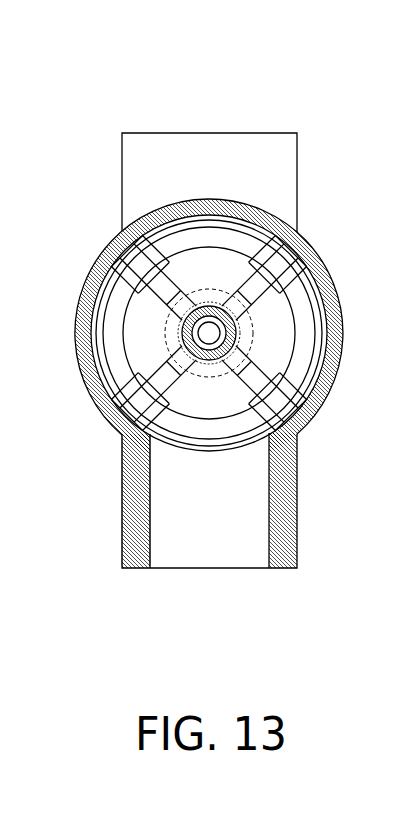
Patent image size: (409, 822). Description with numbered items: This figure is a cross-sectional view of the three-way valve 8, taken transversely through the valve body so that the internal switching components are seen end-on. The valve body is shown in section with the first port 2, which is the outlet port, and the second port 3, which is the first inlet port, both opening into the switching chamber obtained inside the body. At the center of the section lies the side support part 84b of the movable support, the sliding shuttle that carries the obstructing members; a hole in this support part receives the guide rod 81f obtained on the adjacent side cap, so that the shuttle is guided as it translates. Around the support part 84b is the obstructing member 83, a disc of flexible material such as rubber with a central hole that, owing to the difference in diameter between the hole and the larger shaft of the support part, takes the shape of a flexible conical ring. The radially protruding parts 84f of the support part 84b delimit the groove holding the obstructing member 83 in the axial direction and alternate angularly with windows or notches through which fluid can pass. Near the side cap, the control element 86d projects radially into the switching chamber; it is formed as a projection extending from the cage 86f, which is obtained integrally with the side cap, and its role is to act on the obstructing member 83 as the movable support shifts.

The first port 2 is at (254, 133).
The second port 3 is at (135, 570).
The three-way valve 8 is at (332, 138).
The guide rod 81f is at (252, 328).
The obstructing member 83 is at (123, 440).
The side support part 84b is at (203, 365).
The radially protruding part 84f is at (87, 313).
The control element 86d is at (193, 240).
The cage 86f is at (233, 258).